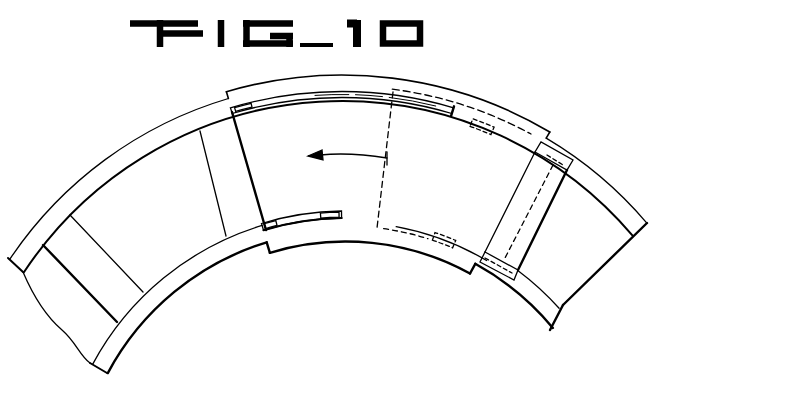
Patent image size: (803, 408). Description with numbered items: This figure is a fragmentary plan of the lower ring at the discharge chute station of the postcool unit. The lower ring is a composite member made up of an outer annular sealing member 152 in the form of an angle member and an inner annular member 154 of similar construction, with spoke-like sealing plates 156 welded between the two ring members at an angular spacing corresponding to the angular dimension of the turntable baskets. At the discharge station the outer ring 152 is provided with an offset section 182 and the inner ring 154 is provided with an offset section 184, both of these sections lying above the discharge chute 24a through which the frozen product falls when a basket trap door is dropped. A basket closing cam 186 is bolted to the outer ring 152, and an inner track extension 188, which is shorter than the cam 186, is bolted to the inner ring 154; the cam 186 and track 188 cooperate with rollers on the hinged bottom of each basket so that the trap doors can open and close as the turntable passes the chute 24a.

The outer annular sealing member 152 is at (138, 147).
The inner annular member 154 is at (177, 284).
The spoke-like sealing plates 156 is at (220, 186).
The offset section 182 is at (489, 108).
The offset section 184 is at (331, 235).
The basket closing cam 186 is at (311, 102).
The inner track extension 188 is at (318, 184).
The discharge chute 24a is at (390, 128).